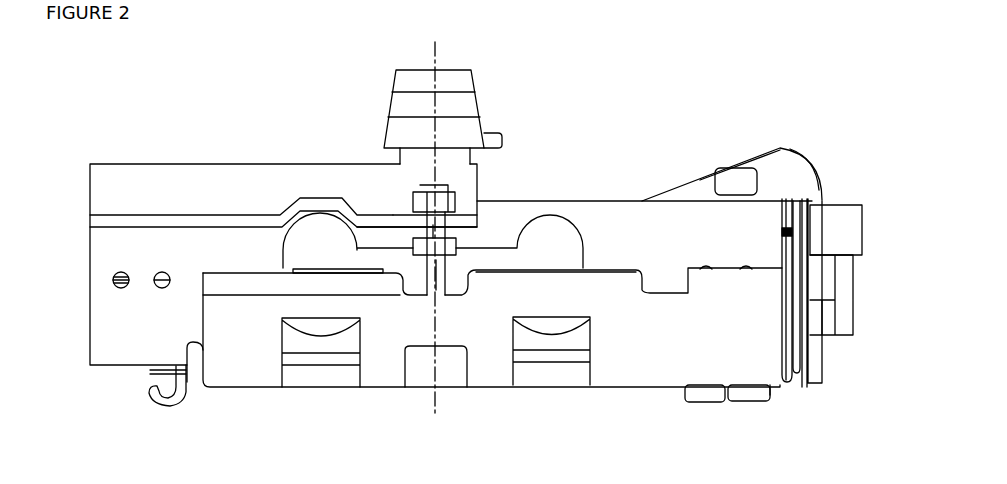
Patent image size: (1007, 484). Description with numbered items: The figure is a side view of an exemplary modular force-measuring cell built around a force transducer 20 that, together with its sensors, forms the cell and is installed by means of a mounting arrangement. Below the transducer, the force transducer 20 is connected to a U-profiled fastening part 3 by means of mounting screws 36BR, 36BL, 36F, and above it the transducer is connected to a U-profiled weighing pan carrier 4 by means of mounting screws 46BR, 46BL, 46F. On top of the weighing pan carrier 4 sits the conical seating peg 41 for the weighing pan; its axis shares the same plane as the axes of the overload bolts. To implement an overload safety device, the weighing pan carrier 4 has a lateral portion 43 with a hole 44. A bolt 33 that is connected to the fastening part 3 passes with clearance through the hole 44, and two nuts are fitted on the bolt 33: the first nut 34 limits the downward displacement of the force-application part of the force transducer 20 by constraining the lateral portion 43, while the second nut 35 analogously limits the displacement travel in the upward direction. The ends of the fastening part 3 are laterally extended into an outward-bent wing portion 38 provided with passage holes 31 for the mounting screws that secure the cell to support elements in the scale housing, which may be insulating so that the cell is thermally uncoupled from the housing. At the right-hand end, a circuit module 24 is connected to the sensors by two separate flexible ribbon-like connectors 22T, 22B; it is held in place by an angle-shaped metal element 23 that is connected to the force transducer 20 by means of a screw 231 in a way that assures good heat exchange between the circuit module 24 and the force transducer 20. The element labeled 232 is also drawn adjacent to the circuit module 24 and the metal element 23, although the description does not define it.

The fastening part 3 is at (247, 357).
The weighing pan carrier 4 is at (279, 156).
The force transducer 20 is at (137, 355).
The flexible ribbon-like connector 22T is at (775, 145).
The flexible ribbon-like connector 22B is at (795, 139).
The angle-shaped metal element 23 is at (700, 192).
The circuit module 24 is at (838, 205).
The passage hole 31 is at (237, 268).
The bolt 33 is at (457, 263).
The first nut 34 is at (458, 242).
The second nut 35 is at (455, 197).
The mounting screw 36F is at (703, 403).
The mounting screw 36BL is at (745, 403).
The mounting screw 36BR is at (745, 403).
The outward-bent wing portion 38 is at (612, 282).
The conical seating peg 41 is at (450, 102).
The lateral portion 43 is at (393, 212).
The hole 44 is at (420, 232).
The mounting screw 46BL is at (118, 162).
The mounting screw 46BR is at (118, 162).
The mounting screw 46F is at (150, 162).
The screw 231 is at (733, 168).
The contact strips 232 is at (795, 323).